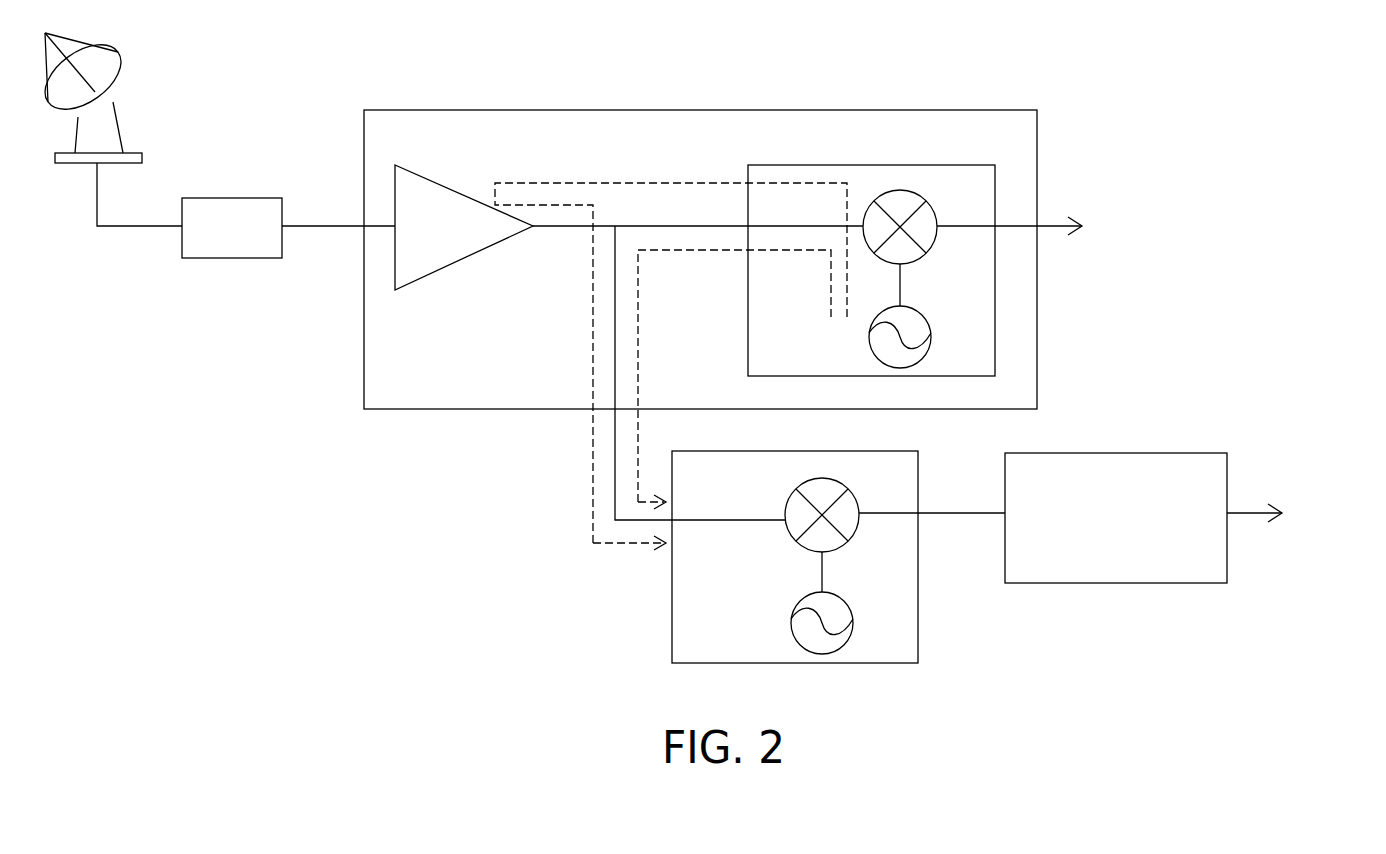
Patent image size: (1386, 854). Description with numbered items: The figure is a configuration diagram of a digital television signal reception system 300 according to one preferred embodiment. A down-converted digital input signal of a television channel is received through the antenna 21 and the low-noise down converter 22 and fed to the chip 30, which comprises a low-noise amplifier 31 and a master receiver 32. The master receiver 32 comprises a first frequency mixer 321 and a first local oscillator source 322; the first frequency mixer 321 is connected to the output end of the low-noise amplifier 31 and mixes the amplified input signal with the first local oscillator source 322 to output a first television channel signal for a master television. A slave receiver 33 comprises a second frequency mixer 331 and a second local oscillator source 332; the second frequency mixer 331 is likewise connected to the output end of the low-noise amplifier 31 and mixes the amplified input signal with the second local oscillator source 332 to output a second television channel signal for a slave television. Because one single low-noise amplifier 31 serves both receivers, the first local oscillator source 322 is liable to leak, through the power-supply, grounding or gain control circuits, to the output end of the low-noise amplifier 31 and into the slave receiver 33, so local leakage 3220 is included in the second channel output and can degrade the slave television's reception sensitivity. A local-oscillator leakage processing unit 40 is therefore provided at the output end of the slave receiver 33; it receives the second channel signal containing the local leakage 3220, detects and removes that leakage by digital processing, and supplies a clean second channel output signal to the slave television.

The antenna 21 is at (103, 85).
The low-noise down converter 22 is at (230, 207).
The chip 30 is at (1008, 122).
The low-noise amplifier 31 is at (447, 203).
The master receiver 32 is at (962, 180).
The first frequency mixer 321 is at (913, 248).
The first local oscillator source 322 is at (888, 342).
The local leakage 3220 is at (593, 342).
The slave receiver 33 is at (900, 472).
The second frequency mixer 331 is at (835, 535).
The second local oscillator source 332 is at (812, 630).
The local-oscillator leakage processing unit 40 is at (1212, 472).
The digital television signal reception system 300 is at (1196, 82).